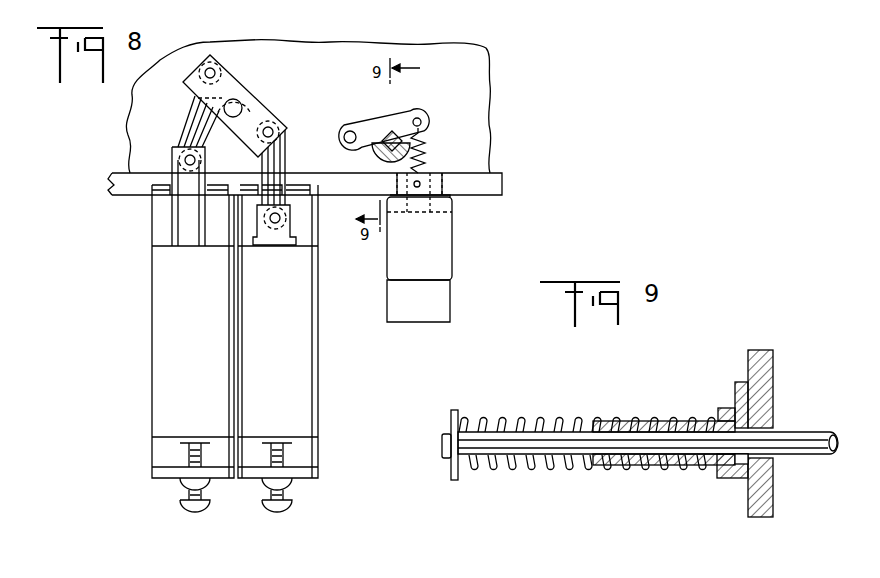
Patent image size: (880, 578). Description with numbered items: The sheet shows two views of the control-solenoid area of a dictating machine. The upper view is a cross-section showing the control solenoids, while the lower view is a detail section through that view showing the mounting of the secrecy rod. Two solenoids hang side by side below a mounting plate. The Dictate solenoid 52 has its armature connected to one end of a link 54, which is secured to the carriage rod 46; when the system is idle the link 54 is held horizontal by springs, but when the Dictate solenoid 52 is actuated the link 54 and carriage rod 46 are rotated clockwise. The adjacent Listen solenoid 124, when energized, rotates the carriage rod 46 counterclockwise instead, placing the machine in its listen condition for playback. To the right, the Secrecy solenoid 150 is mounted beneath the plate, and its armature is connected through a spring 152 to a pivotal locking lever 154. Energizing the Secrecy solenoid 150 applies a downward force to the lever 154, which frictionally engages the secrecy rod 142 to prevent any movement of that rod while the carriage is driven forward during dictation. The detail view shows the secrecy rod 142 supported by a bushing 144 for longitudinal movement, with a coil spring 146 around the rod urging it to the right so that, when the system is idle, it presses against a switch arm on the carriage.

In FIG. 8, the carriage rod 46 is at (236, 104).
In FIG. 8, the link 54 is at (268, 125).
In FIG. 8, the Listen solenoid 124 is at (166, 344).
In FIG. 8, the Dictate solenoid 52 is at (300, 336).
In FIG. 8, the Secrecy solenoid 150 is at (437, 233).
In FIG. 8, the locking lever 154 is at (397, 118).
In FIG. 8, the secrecy rod 142 is at (390, 138).
In FIG. 9, the secrecy rod 142 is at (800, 437).
In FIG. 8, the bushing 144 is at (378, 154).
In FIG. 9, the bushing 144 is at (714, 468).
In FIG. 8, the spring 152 is at (424, 152).
In FIG. 9, the spring 146 is at (522, 418).